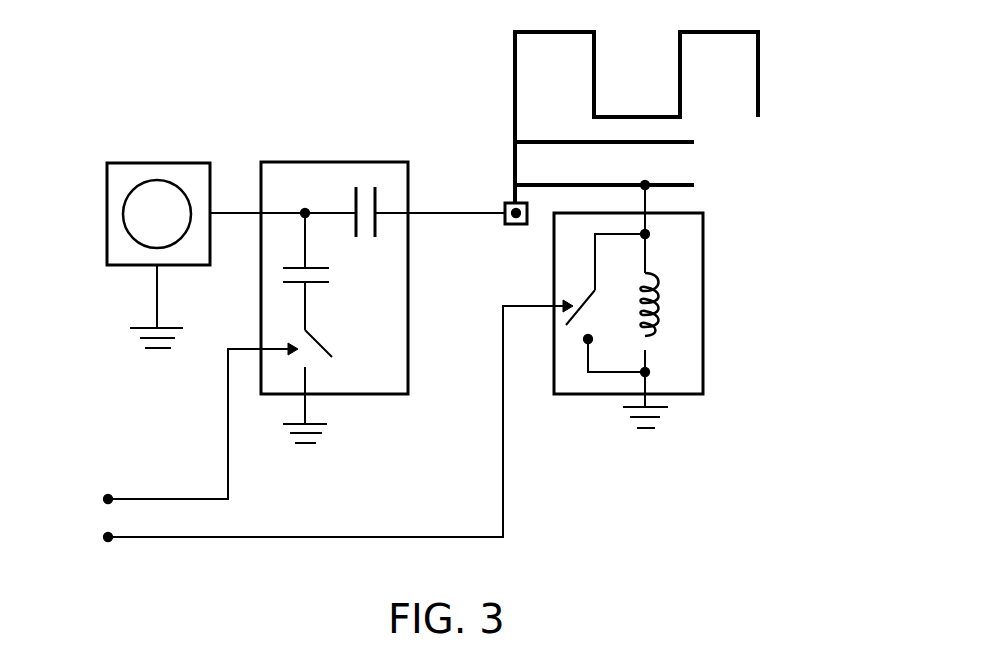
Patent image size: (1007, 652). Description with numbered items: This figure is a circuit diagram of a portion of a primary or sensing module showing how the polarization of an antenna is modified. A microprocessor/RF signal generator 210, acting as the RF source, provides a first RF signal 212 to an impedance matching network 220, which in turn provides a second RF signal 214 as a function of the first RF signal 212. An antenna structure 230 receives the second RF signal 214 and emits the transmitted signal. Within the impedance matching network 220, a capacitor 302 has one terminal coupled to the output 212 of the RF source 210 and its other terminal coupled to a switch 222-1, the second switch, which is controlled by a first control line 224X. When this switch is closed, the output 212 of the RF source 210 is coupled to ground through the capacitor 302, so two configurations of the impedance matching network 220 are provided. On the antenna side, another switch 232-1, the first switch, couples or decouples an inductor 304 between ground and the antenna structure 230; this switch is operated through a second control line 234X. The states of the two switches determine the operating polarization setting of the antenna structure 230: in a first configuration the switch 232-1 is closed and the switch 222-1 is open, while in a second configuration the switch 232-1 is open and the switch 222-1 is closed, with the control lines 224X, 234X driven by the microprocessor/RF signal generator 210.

The microprocessor/RF signal generator 210 is at (145, 161).
The first RF signal 212 is at (232, 210).
The impedance matching network 220 is at (334, 277).
The capacitor 302 is at (330, 275).
The switch 222-1 is at (323, 365).
The second RF signal 214 is at (444, 215).
The antenna structure 230 is at (760, 73).
The inductor 304 is at (657, 285).
The switch 232-1 is at (585, 345).
The control line 224X is at (80, 486).
The control line 234X is at (78, 550).